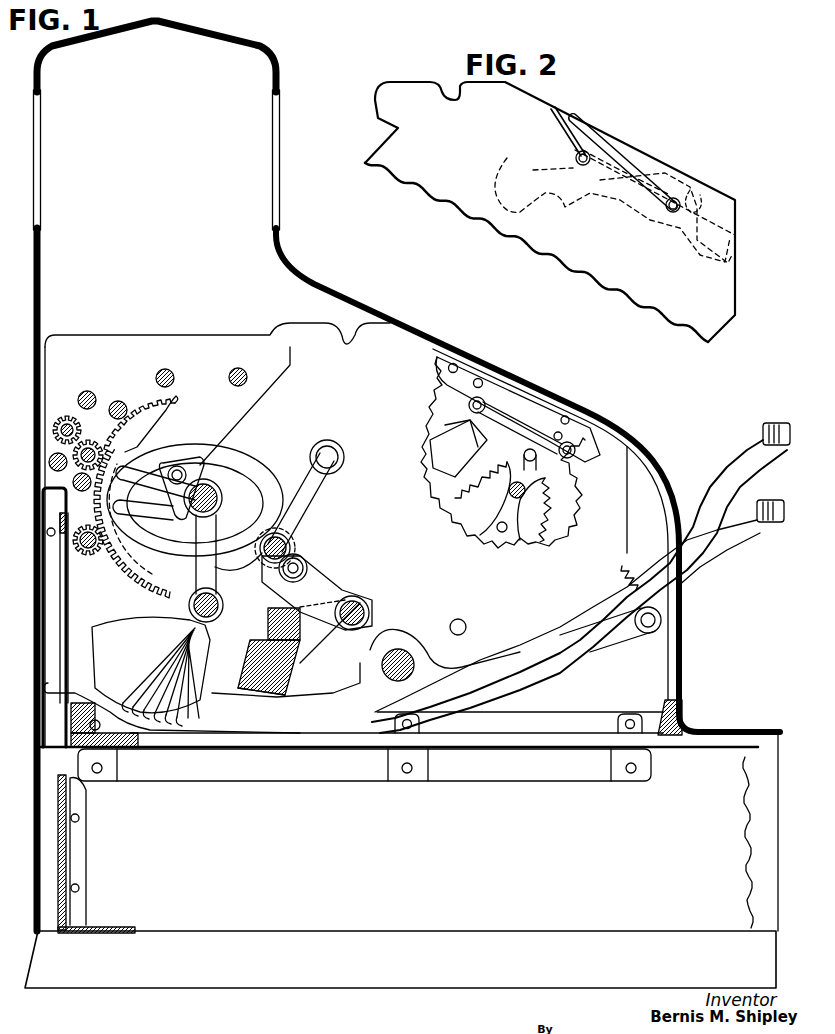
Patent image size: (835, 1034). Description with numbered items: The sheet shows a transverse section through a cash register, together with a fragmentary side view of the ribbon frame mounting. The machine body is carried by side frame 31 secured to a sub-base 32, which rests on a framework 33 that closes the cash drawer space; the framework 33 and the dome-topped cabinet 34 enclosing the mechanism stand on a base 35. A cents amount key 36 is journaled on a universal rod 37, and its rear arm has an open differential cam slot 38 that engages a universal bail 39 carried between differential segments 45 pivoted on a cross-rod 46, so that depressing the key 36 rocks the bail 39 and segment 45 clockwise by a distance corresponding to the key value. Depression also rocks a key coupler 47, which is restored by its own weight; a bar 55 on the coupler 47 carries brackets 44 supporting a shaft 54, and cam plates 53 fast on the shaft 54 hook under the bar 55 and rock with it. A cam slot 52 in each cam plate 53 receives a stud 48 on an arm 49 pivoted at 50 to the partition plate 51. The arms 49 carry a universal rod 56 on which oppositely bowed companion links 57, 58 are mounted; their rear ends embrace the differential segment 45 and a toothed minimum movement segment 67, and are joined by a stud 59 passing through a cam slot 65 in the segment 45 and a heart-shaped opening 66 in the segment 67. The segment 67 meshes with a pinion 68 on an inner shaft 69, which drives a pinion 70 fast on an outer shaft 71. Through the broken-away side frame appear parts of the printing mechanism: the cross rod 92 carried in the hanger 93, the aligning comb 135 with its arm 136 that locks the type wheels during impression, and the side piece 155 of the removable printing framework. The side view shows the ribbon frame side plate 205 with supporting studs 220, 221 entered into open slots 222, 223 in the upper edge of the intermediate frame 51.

In FIG. 1, the side frame 31 is at (148, 342).
In FIG. 1, the sub-base 32 is at (555, 742).
In FIG. 1, the framework 33 is at (740, 784).
In FIG. 1, the cabinet 34 is at (334, 290).
In FIG. 1, the base 35 is at (360, 990).
In FIG. 1, the amount key 36 is at (573, 660).
In FIG. 1, the universal rod 37 is at (405, 676).
In FIG. 1, the differential cam slot 38 is at (125, 660).
In FIG. 1, the universal bail 39 is at (193, 592).
In FIG. 1, the bracket 44 is at (330, 661).
In FIG. 1, the differential segment 45 is at (123, 581).
In FIG. 1, the cross-rod 46 is at (222, 505).
In FIG. 1, the key coupler 47 is at (298, 688).
In FIG. 1, the stud 48 is at (307, 563).
In FIG. 1, the arm 49 is at (305, 513).
In FIG. 1, the pivot 50 is at (330, 462).
In FIG. 1, the partition plate 51 is at (262, 410).
In FIG. 2, the partition plate 51 is at (450, 206).
In FIG. 1, the cam slot 52 is at (258, 602).
In FIG. 1, the cam plate 53 is at (312, 586).
In FIG. 1, the shaft 54 is at (360, 603).
In FIG. 1, the bar 55 is at (292, 612).
In FIG. 1, the universal rod 56 is at (297, 543).
In FIG. 1, the companion link 57 is at (228, 556).
In FIG. 1, the companion link 58 is at (277, 487).
In FIG. 1, the stud 59 is at (177, 466).
In FIG. 1, the cam slot 65 is at (140, 484).
In FIG. 1, the heart-shaped opening 66 is at (165, 522).
In FIG. 1, the minimum movement segment 67 is at (174, 404).
In FIG. 1, the pinion 68 is at (92, 447).
In FIG. 1, the shaft 69 is at (73, 472).
In FIG. 1, the pinion 70 is at (69, 415).
In FIG. 1, the shaft 71 is at (65, 421).
In FIG. 1, the cross rod 92 is at (497, 532).
In FIG. 1, the hanger 93 is at (520, 512).
In FIG. 1, the aligning comb 135 is at (487, 481).
In FIG. 1, the arm 136 is at (450, 480).
In FIG. 1, the side piece 155 is at (556, 400).
In FIG. 2, the side piece 155 is at (672, 166).
In FIG. 1, the side plate 205 is at (500, 420).
In FIG. 2, the side plate 205 is at (508, 176).
In FIG. 1, the supporting stud 220 is at (484, 412).
In FIG. 2, the supporting stud 220 is at (580, 165).
In FIG. 1, the supporting stud 221 is at (560, 445).
In FIG. 2, the supporting stud 221 is at (682, 207).
In FIG. 2, the open slot 222 is at (553, 108).
In FIG. 2, the open slot 223 is at (648, 162).